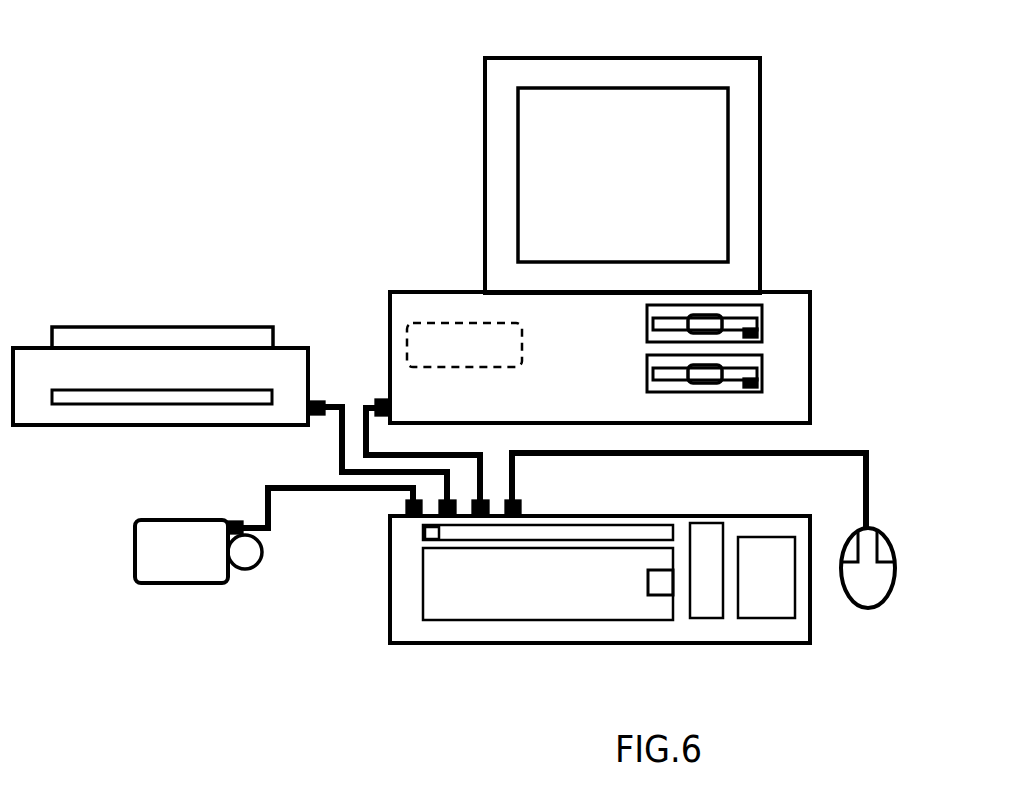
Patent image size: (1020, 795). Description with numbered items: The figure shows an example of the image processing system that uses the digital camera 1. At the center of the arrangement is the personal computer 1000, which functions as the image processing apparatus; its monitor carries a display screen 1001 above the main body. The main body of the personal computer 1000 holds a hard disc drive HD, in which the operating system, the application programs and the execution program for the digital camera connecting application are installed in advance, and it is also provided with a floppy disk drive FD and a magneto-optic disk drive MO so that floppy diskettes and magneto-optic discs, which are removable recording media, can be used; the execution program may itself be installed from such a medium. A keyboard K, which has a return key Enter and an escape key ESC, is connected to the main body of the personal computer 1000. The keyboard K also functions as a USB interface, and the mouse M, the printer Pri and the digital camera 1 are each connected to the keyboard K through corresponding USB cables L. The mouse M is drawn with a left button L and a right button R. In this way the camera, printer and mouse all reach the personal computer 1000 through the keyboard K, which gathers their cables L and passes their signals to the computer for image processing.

The personal computer 1000 is at (645, 34).
The display screen 1001 is at (623, 175).
The hard disc drive HD is at (464, 363).
The floppy disk drive FD is at (667, 323).
The magneto-optic disk drive MO is at (668, 371).
The printer Pri is at (167, 325).
The digital camera 1 is at (178, 518).
The USB cable L is at (338, 449).
The mouse M is at (877, 528).
The right mouse button R is at (888, 545).
The keyboard K is at (593, 514).
The escape key ESC is at (459, 565).
The return key Enter is at (658, 597).